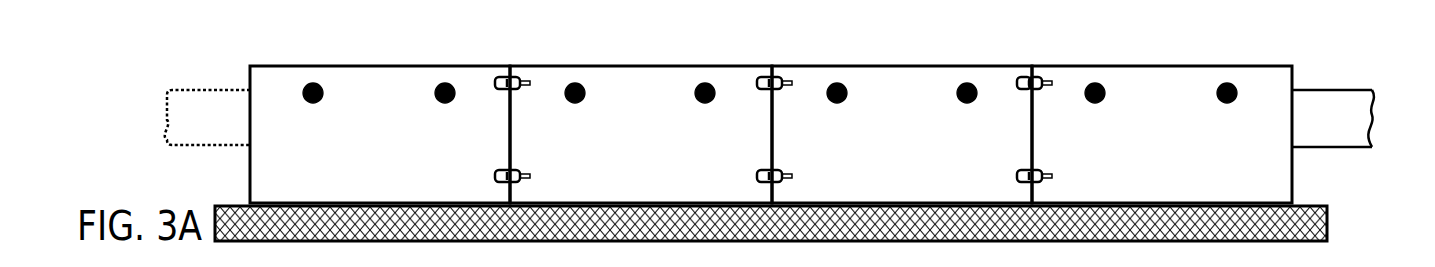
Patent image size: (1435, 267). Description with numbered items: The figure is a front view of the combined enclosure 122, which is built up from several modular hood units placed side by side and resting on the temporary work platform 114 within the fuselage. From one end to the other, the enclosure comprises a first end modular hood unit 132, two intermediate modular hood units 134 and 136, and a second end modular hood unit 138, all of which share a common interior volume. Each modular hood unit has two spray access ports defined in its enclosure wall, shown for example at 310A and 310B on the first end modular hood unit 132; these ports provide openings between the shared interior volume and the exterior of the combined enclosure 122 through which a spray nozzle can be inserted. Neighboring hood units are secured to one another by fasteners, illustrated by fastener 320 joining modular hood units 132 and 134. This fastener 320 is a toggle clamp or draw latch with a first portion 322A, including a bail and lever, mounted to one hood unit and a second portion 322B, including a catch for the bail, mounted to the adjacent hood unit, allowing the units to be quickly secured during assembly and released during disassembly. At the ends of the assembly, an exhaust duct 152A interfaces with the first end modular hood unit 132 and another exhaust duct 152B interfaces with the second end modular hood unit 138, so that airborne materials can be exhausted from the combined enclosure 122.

The temporary work platform 114 is at (235, 215).
The combined enclosure 122 is at (778, 109).
The first end modular hood unit 132 is at (1162, 112).
The intermediate modular hood unit 134 is at (872, 82).
The intermediate modular hood unit 136 is at (617, 82).
The second end modular hood unit 138 is at (355, 82).
The exhaust duct 152A is at (1340, 98).
The exhaust duct 152B is at (200, 100).
The spray access port 310A is at (1222, 90).
The spray access port 310B is at (1095, 90).
The fastener 320 is at (1000, 52).
The first portion 322A is at (1040, 78).
The second portion 322B is at (1025, 78).